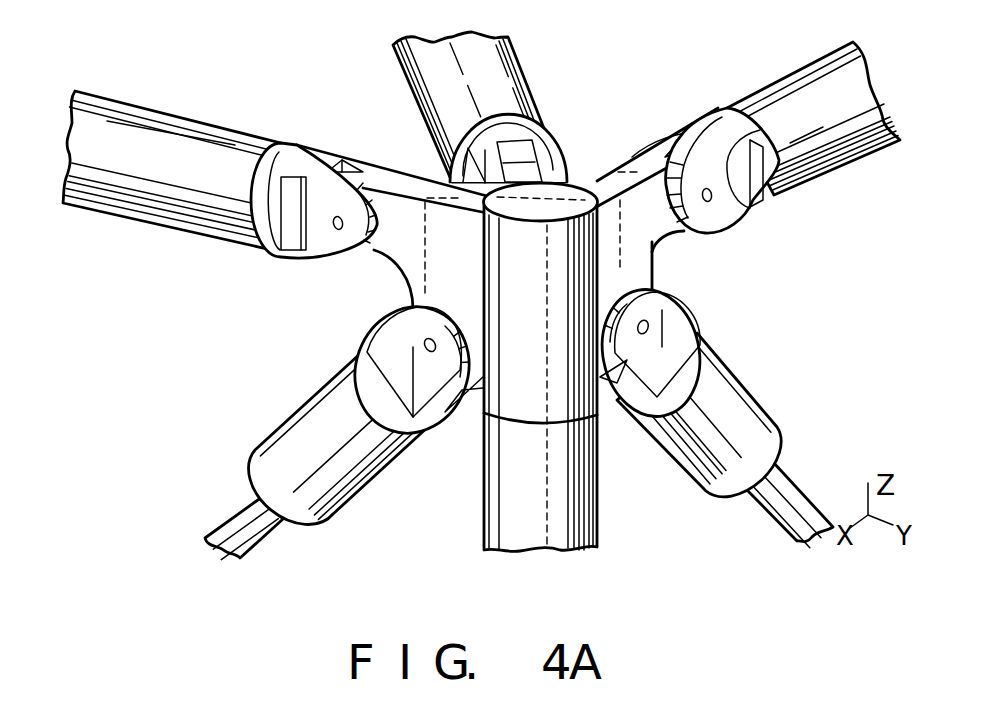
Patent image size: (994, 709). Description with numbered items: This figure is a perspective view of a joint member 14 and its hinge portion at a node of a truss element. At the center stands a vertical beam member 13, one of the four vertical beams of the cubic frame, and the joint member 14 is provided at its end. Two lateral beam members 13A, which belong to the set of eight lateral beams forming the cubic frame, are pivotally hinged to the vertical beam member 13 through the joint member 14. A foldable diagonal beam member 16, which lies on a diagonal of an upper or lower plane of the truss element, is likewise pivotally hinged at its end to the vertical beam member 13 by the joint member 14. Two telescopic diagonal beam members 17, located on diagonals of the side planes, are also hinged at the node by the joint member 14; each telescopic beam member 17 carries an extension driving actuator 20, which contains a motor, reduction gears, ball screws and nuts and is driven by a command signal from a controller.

The vertical beam member 13 is at (487, 501).
The lateral beam member 13A is at (213, 130).
The joint member 14 is at (643, 245).
The foldable diagonal beam member 16 is at (530, 101).
The telescopic diagonal beam member 17 is at (239, 527).
The extension driving actuator 20 is at (287, 423).